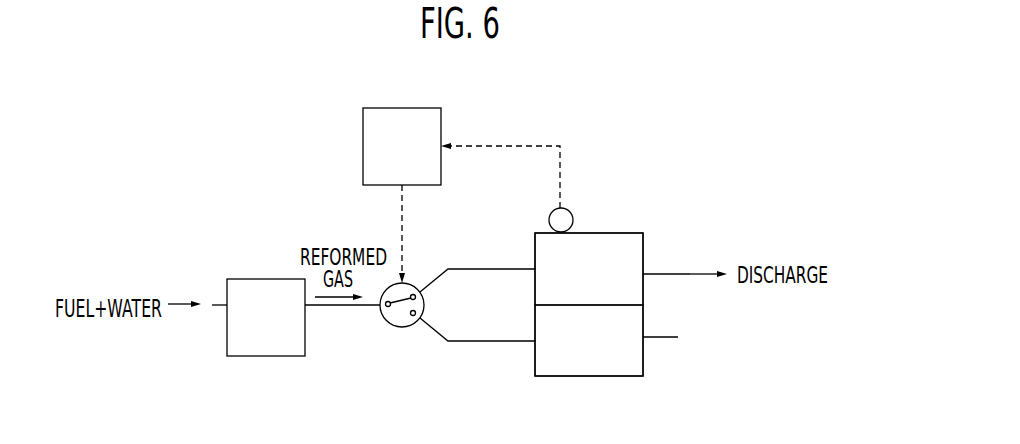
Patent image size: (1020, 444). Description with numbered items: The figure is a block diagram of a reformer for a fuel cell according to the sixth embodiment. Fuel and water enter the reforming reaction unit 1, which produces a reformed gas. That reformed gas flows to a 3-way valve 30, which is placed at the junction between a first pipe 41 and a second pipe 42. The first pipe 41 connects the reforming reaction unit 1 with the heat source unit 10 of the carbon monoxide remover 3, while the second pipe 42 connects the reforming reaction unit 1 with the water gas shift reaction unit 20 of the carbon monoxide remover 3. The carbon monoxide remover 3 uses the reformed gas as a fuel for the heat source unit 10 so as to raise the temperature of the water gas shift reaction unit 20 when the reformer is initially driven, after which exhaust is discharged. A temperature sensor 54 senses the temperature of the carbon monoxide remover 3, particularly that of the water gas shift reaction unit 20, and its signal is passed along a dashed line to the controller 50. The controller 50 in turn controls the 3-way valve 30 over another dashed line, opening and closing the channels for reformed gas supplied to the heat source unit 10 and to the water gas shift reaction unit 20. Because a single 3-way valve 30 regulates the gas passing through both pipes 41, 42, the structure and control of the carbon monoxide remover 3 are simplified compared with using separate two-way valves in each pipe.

The reforming reaction unit 1 is at (265, 279).
The carbon monoxide remover 3 is at (651, 198).
The heat source unit 10 is at (607, 233).
The water gas shift reaction unit 20 is at (601, 378).
The 3-way valve 30 is at (400, 328).
The first pipe 41 is at (490, 268).
The second pipe 42 is at (490, 342).
The controller 50 is at (402, 108).
The temperature sensor 54 is at (572, 212).